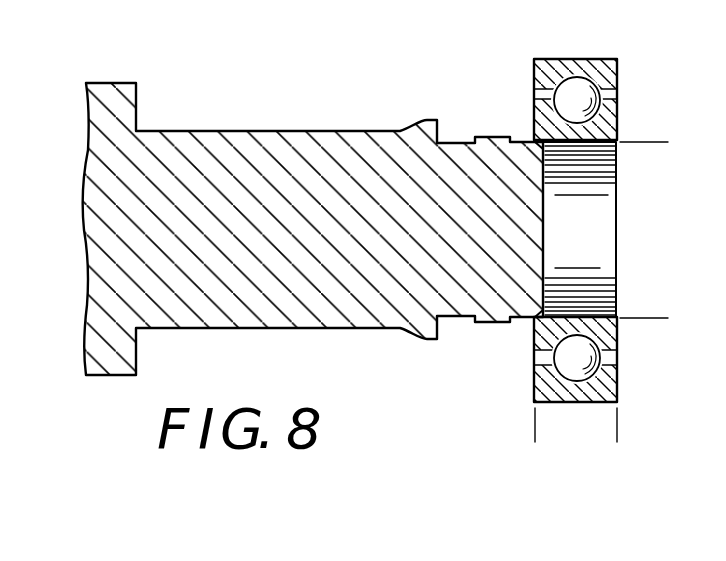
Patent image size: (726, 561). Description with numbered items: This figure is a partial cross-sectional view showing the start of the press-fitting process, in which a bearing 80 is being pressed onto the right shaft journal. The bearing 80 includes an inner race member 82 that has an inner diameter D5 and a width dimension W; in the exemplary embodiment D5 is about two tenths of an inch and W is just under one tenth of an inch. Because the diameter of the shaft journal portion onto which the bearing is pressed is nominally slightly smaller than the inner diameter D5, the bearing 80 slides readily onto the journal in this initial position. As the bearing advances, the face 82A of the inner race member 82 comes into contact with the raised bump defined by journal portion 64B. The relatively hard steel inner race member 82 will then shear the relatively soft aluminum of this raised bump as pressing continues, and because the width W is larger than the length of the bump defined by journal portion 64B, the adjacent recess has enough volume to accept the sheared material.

The bearing 80 is at (606, 203).
The inner race member 82 is at (617, 118).
The face of the inner race member 82A is at (531, 137).
The journal portion 64B is at (508, 134).
The inner diameter D5 is at (644, 142).
The width dimension W is at (650, 423).